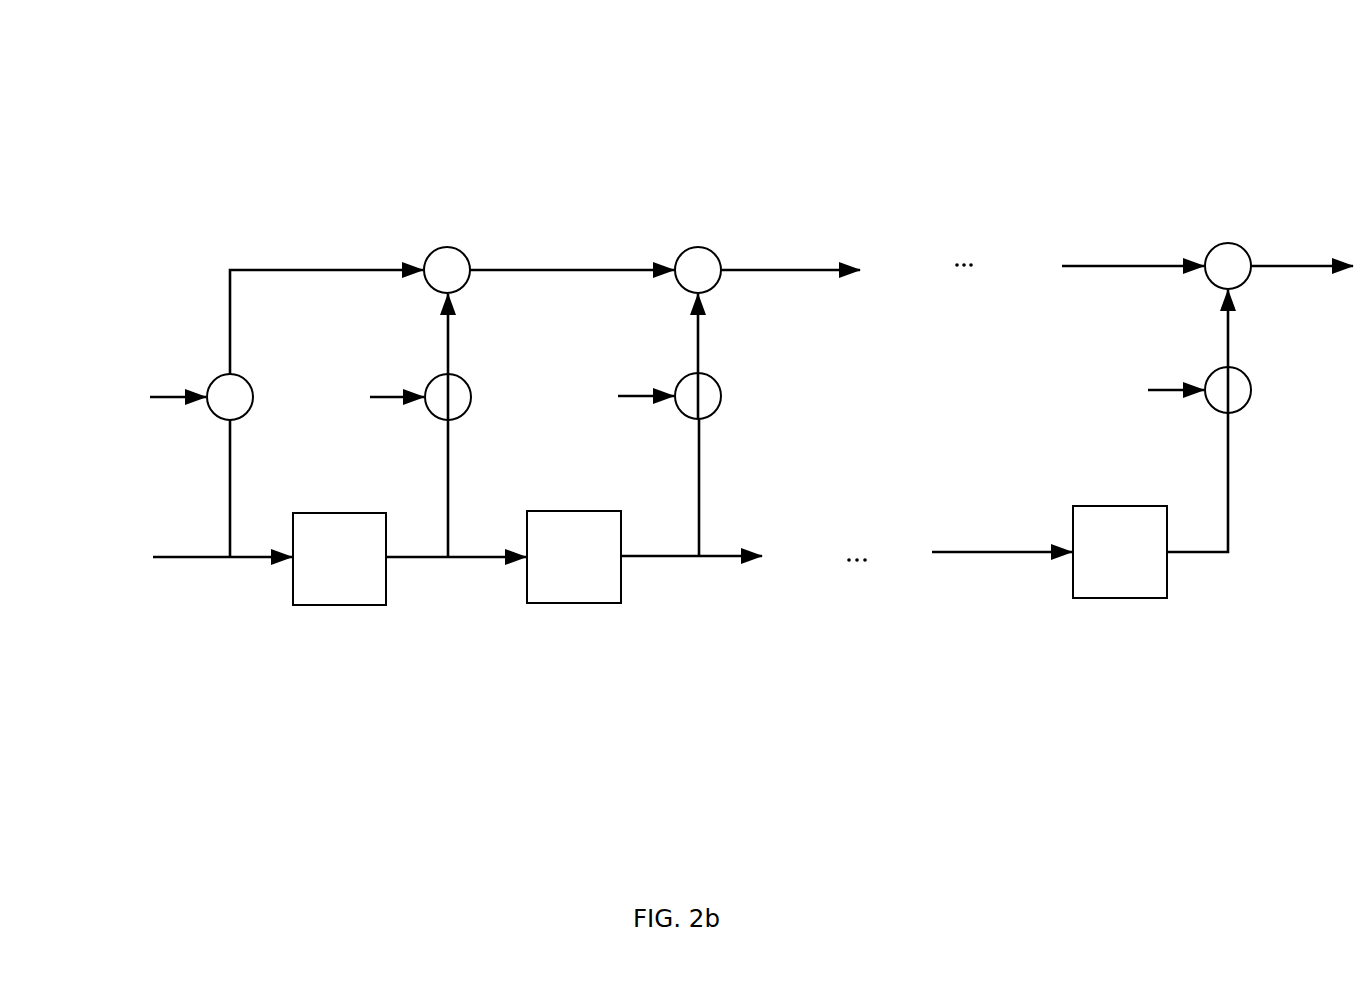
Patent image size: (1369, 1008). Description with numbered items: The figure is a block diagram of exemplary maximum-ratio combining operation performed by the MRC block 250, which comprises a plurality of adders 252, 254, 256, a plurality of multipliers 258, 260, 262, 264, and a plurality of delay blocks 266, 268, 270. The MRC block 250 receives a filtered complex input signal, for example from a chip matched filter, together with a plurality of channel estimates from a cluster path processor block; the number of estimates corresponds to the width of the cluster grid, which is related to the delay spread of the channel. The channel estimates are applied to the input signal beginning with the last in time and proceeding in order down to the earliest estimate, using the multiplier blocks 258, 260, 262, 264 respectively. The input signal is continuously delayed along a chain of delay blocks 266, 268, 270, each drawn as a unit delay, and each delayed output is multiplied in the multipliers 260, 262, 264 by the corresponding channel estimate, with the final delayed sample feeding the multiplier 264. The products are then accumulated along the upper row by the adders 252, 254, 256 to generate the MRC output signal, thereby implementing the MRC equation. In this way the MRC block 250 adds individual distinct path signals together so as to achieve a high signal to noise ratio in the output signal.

The maximum-ratio combining (MRC) block 250 is at (232, 115).
The adder 252 is at (430, 290).
The adder 254 is at (680, 290).
The adder 256 is at (1210, 286).
The multiplier 258 is at (216, 421).
The multiplier 260 is at (432, 421).
The multiplier 262 is at (686, 419).
The multiplier 264 is at (1212, 413).
The delay block 266 is at (322, 608).
The delay block 268 is at (545, 606).
The delay block 270 is at (1093, 600).